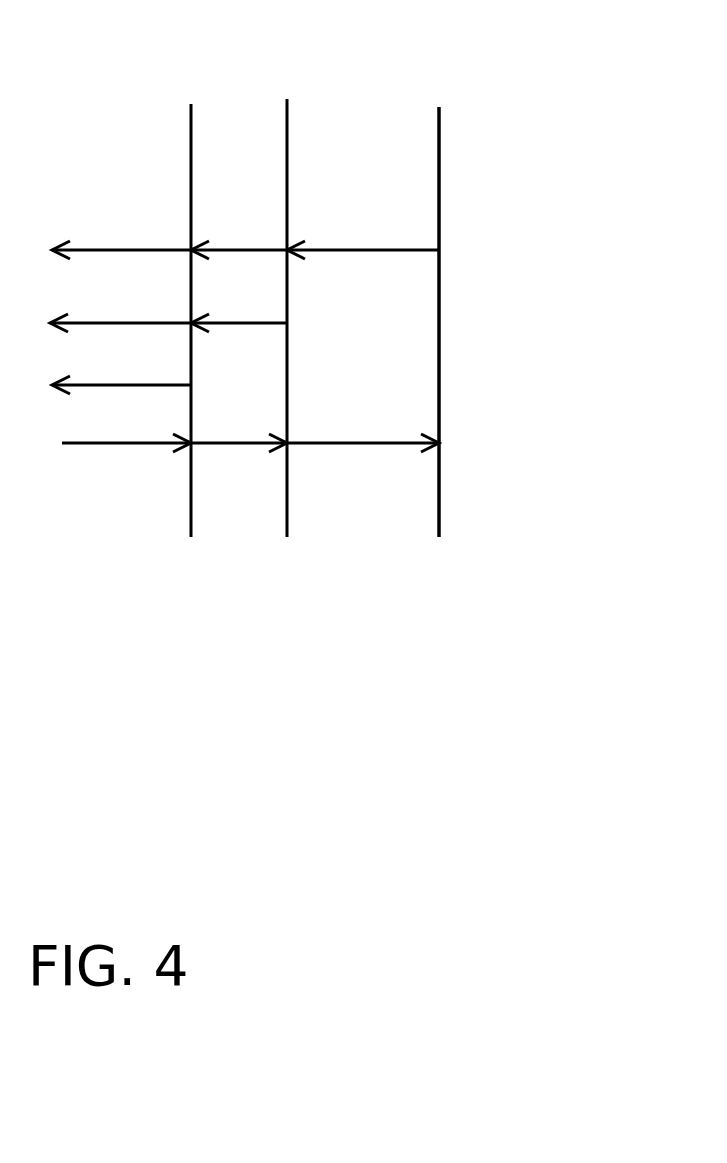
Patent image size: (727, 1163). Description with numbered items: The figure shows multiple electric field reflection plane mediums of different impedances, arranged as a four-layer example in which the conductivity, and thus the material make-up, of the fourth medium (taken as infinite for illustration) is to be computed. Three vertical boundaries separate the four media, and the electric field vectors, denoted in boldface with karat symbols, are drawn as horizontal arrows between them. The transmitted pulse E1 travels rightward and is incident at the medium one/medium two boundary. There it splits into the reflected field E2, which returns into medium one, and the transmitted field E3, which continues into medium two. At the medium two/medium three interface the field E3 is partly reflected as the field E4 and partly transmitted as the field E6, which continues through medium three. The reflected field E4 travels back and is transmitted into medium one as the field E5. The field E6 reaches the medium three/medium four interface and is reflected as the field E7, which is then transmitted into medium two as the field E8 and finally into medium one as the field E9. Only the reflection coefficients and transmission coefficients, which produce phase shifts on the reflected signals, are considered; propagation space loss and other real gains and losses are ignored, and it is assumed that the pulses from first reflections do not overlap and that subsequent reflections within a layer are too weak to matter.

The transmitted pulse E1 is at (126, 468).
The reflected field of E1 E2 is at (121, 406).
The transmitted field of E1 E3 is at (239, 468).
The reflected field of E3 E4 is at (239, 346).
The transmitted field of E4 E5 is at (120, 346).
The transmitted field of E3 E6 is at (363, 470).
The reflected field of E6 E7 is at (363, 273).
The transmitted field of E7 E8 is at (239, 270).
The transmitted field of E8 E9 is at (121, 270).